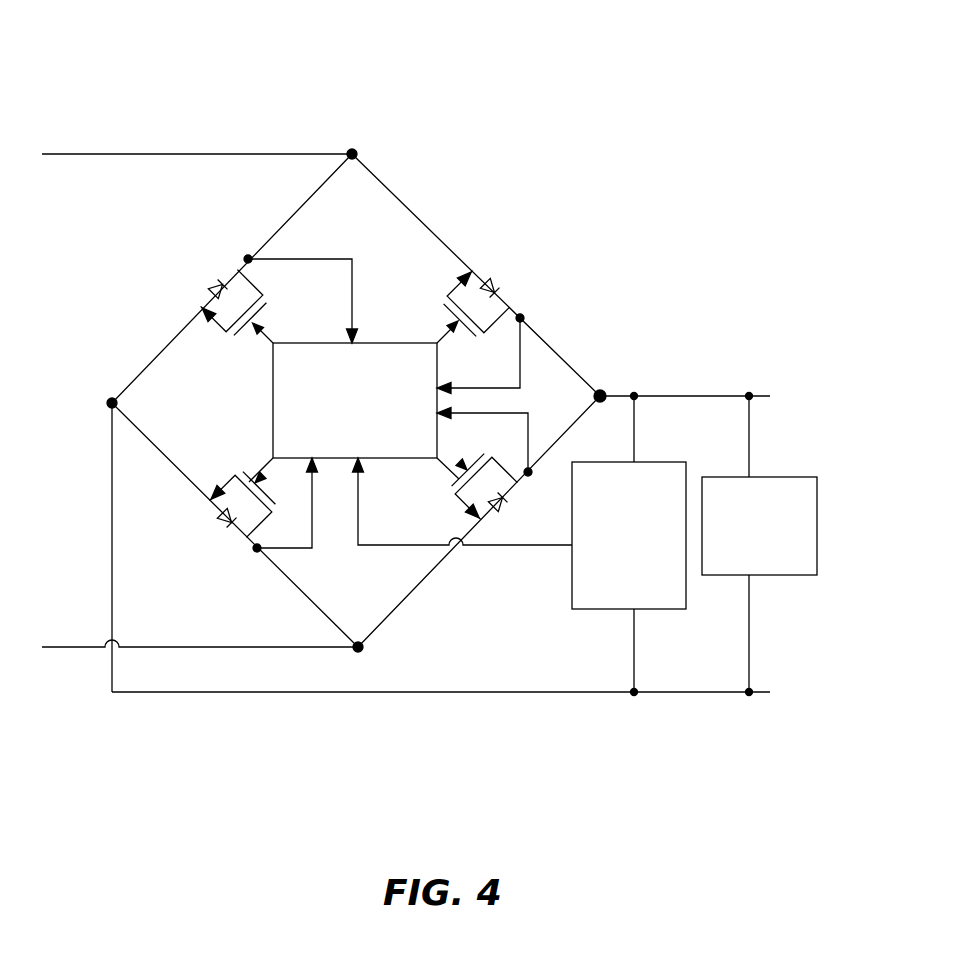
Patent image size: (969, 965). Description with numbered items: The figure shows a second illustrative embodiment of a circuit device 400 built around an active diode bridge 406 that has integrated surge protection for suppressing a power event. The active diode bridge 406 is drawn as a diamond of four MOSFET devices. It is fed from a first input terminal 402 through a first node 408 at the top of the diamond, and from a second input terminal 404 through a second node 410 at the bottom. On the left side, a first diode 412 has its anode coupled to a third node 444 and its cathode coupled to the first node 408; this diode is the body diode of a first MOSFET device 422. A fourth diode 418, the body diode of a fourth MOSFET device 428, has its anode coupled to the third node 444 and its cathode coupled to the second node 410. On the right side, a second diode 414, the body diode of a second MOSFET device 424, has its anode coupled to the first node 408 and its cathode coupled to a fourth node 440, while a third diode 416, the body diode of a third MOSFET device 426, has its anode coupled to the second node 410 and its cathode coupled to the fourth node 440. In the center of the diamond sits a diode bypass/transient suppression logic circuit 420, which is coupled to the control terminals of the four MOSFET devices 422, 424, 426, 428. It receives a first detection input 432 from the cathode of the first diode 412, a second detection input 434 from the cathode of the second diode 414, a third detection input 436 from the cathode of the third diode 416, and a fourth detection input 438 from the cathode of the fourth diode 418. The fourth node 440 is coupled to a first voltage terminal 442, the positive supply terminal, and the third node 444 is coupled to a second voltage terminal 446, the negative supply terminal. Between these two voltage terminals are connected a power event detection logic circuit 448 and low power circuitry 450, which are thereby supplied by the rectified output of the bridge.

The circuit device 400 is at (125, 43).
The first input terminal 402 is at (187, 154).
The second input terminal 404 is at (241, 647).
The active diode bridge 406 is at (476, 210).
The first node 408 is at (352, 153).
The second node 410 is at (355, 652).
The first diode 412 is at (212, 296).
The second diode 414 is at (492, 280).
The third diode 416 is at (501, 509).
The fourth diode 418 is at (218, 515).
The diode bypass/transient suppression logic circuit 420 is at (273, 398).
The first metal oxide semiconductor field effect transistor device 422 is at (206, 268).
The second MOSFET device 424 is at (453, 281).
The third MOSFET device 426 is at (442, 512).
The fourth MOSFET device 428 is at (213, 458).
The first detection input 432 is at (293, 258).
The second detection input 434 is at (522, 350).
The third detection input 436 is at (495, 413).
The fourth detection input 438 is at (283, 550).
The fourth node 440 is at (604, 393).
The first voltage terminal 442 is at (756, 394).
The third node 444 is at (112, 400).
The second voltage terminal 446 is at (595, 693).
The power event detection logic circuit 448 is at (572, 611).
The low power circuitry 450 is at (791, 476).